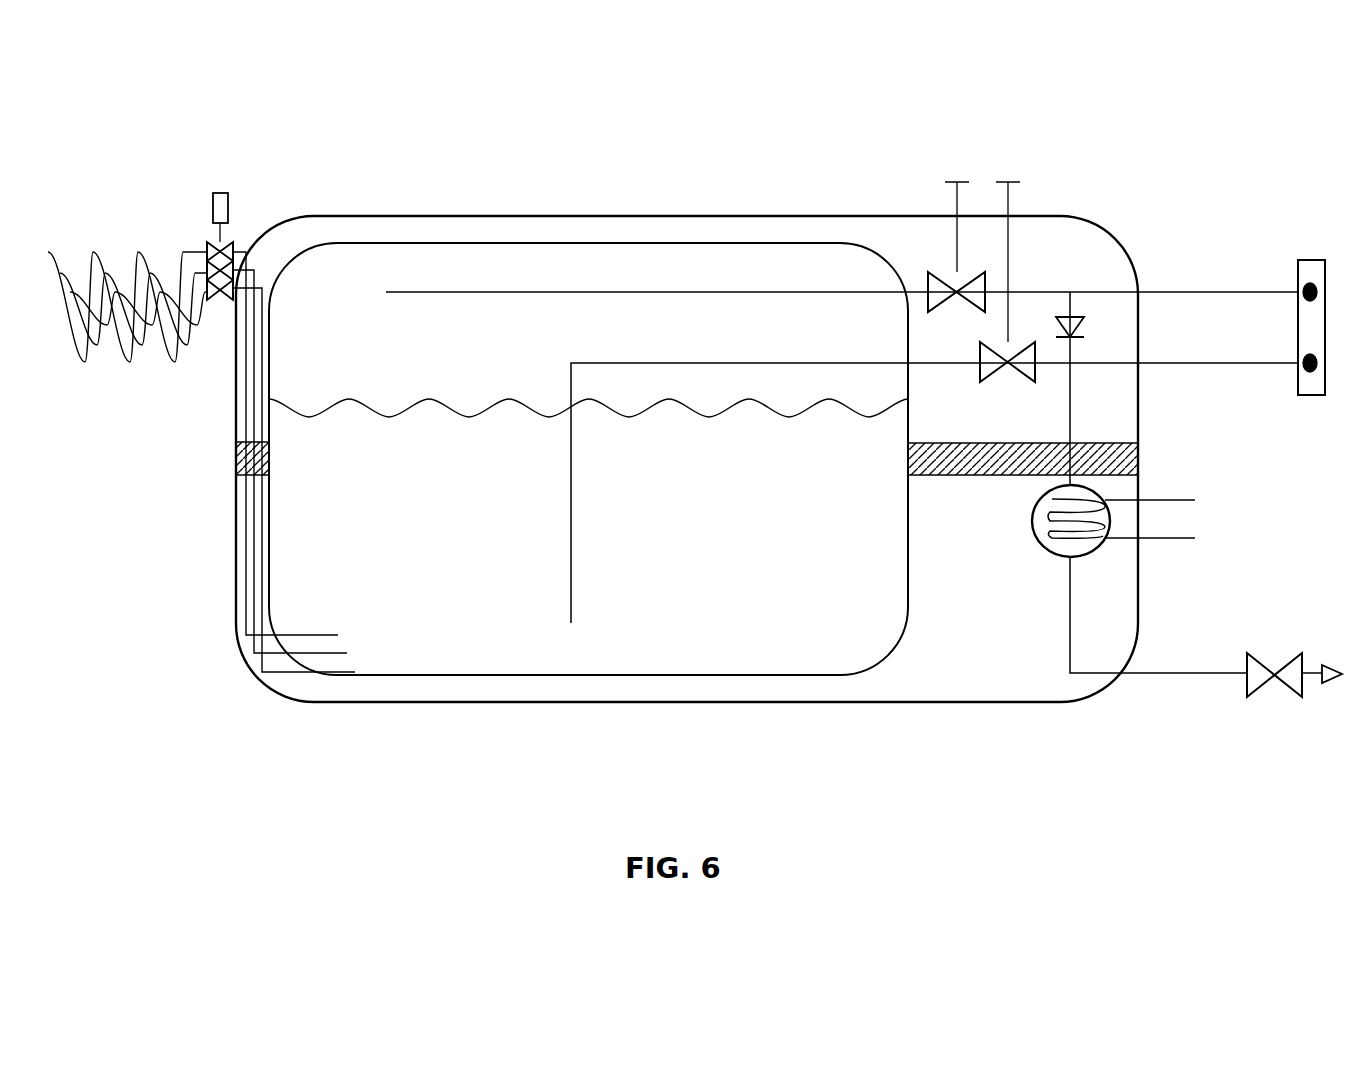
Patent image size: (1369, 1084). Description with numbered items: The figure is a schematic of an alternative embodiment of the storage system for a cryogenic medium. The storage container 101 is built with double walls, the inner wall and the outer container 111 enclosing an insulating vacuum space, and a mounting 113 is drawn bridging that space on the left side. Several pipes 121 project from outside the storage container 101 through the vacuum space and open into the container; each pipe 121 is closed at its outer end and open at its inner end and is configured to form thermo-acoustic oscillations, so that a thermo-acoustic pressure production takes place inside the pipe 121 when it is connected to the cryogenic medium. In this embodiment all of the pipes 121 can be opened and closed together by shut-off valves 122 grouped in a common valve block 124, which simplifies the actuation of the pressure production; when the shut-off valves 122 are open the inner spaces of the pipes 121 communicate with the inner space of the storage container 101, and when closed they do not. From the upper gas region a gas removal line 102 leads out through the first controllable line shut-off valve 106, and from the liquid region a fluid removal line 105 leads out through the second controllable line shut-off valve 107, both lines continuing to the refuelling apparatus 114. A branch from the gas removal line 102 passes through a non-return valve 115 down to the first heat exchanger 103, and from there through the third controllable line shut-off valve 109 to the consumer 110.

The storage container 101 is at (490, 240).
The gas removal line 102 is at (698, 290).
The first heat exchanger 103 is at (1103, 550).
The fluid removal line 105 is at (760, 358).
The first controllable line shut-off valve 106 is at (943, 262).
The second controllable line shut-off valve 107 is at (980, 378).
The third controllable line shut-off valve 109 is at (1253, 705).
The consumer 110 is at (1325, 692).
The outer container 111 is at (448, 213).
The mounting 113 is at (235, 458).
The refuelling apparatus 114 is at (1315, 258).
The non-return valve 115 is at (1079, 310).
The pipe 121 is at (112, 352).
The shut-off valve 122 is at (205, 256).
The valve block 124 is at (212, 206).